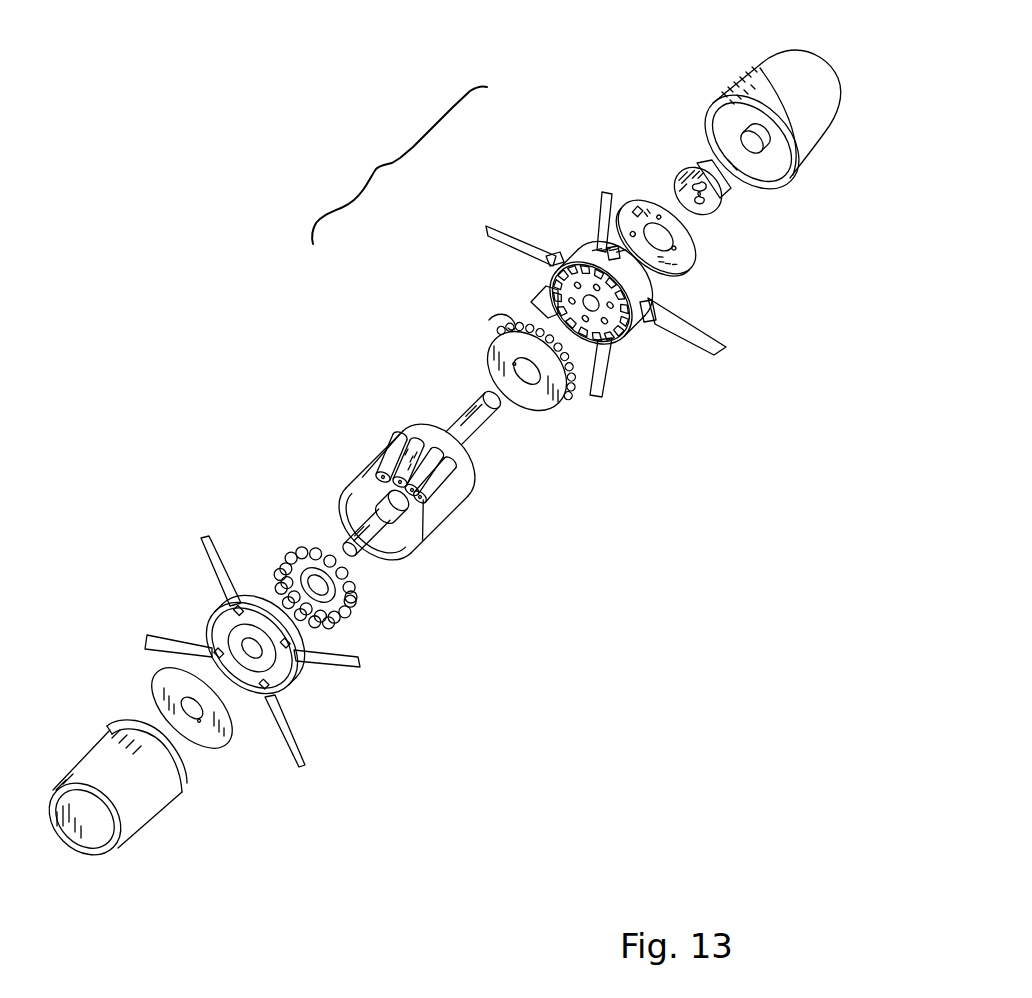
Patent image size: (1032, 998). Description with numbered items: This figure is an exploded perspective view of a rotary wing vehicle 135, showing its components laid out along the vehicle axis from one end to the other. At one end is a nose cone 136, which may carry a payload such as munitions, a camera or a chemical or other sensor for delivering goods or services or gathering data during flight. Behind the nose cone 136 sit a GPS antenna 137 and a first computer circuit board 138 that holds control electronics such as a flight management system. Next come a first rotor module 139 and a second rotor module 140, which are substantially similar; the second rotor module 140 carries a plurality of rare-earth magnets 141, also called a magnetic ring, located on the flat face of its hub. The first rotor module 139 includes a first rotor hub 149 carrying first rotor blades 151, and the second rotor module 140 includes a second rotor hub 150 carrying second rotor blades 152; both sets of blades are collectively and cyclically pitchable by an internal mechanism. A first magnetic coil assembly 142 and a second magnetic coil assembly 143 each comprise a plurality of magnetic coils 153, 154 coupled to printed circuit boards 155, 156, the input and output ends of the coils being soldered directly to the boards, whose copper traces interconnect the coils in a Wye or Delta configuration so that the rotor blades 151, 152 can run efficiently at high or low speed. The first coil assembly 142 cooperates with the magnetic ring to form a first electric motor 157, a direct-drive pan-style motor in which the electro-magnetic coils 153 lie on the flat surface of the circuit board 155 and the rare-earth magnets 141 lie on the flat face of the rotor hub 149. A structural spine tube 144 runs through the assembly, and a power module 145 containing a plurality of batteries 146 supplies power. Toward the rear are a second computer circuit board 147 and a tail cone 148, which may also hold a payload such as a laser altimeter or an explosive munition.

The rotary wing vehicle 135 is at (278, 146).
The nose cone 136 is at (757, 72).
The GPS antenna 137 is at (727, 201).
The first computer circuit board 138 is at (696, 264).
The first rotor module 139 is at (652, 405).
The second rotor module 140 is at (355, 745).
The rare-earth magnets 141 is at (537, 297).
The first magnetic coil assembly 142 is at (535, 455).
The second magnetic coil assembly 143 is at (250, 518).
The structural spine tube 144 is at (478, 408).
The power module 145 is at (488, 578).
The batteries 146 is at (392, 440).
The second computer circuit board 147 is at (218, 745).
The tail cone 148 is at (134, 832).
The first rotor hub 149 is at (660, 306).
The second rotor hub 150 is at (216, 610).
The first rotor blades 151 is at (535, 204).
The second rotor blades 152 is at (204, 535).
The magnetic coils 153 is at (490, 319).
The magnetic coils 154 is at (365, 606).
The printed circuit board 155 is at (500, 348).
The printed circuit board 156 is at (290, 543).
The first electric motor 157 is at (399, 165).